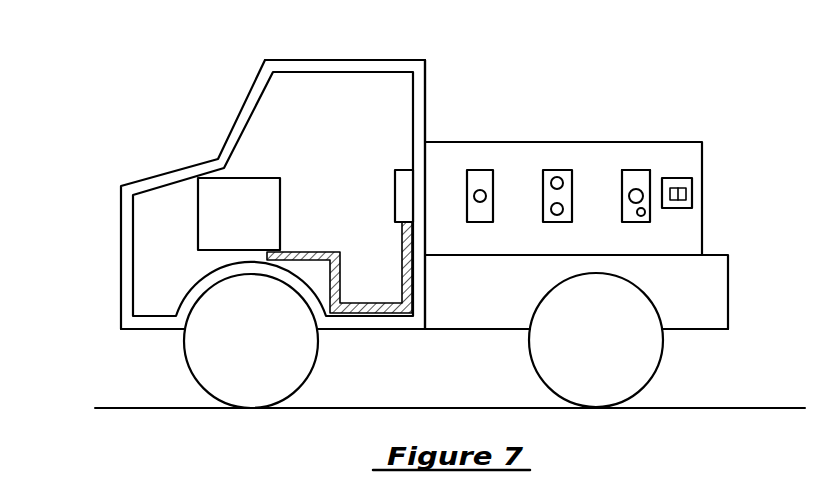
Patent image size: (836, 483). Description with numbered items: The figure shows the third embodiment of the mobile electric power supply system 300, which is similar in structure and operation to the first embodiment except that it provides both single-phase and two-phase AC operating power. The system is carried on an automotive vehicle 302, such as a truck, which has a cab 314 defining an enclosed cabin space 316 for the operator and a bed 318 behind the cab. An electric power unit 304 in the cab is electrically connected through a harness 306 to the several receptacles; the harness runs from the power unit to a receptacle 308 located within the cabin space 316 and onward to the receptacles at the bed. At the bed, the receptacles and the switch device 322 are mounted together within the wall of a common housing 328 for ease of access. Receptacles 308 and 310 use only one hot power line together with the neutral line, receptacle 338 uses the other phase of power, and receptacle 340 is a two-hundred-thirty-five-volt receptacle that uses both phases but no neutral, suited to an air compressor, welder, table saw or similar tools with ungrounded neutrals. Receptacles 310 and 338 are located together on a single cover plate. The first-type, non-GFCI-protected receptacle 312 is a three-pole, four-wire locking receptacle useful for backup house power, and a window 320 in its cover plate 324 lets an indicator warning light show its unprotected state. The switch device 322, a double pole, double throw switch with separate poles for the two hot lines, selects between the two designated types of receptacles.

The mobile electric power supply system 300 is at (417, 204).
The automotive vehicle 302 is at (112, 258).
The electric power unit 304 is at (260, 188).
The harness 306 is at (300, 250).
The receptacle 308 is at (404, 170).
The receptacle 310 is at (543, 183).
The locking type receptacle 312 is at (622, 195).
The cab 314 is at (426, 78).
The enclosed cabin space 316 is at (320, 84).
The bed 318 is at (741, 267).
The window 320 is at (641, 216).
The switch device 322 is at (675, 178).
The cover plate 324 is at (635, 170).
The housing 328 is at (703, 197).
The receptacle 338 is at (543, 208).
The 235 VAC receptacle 340 is at (467, 196).